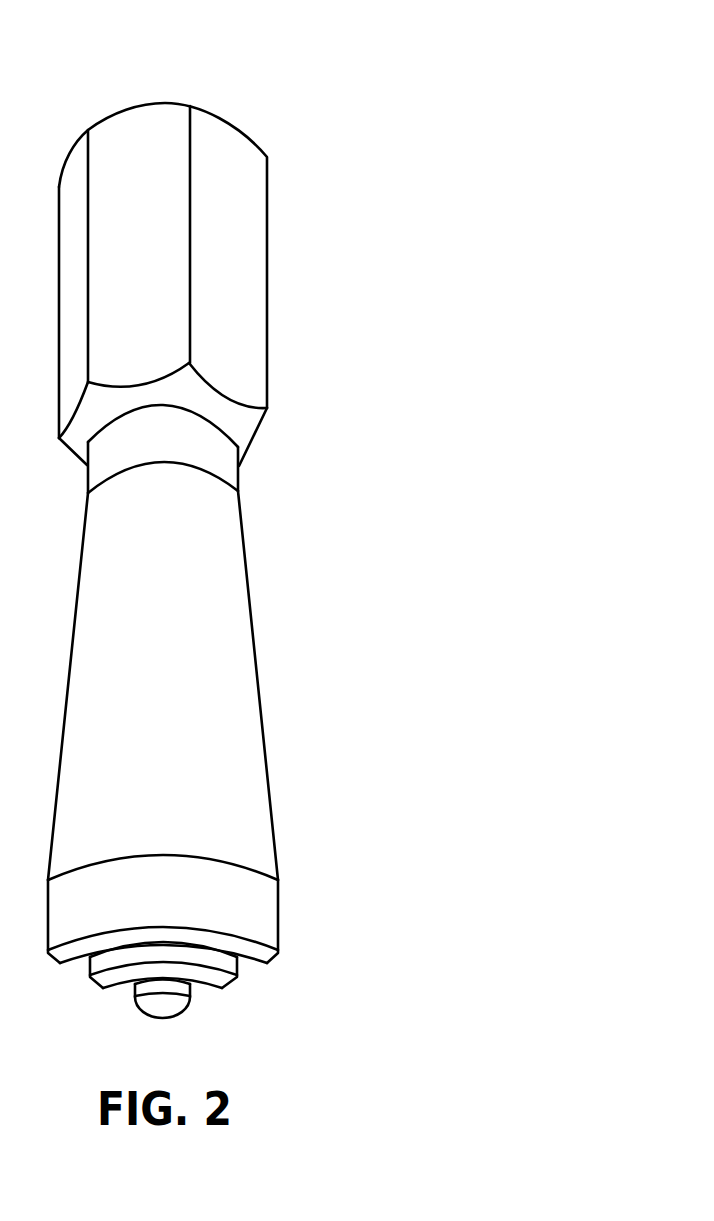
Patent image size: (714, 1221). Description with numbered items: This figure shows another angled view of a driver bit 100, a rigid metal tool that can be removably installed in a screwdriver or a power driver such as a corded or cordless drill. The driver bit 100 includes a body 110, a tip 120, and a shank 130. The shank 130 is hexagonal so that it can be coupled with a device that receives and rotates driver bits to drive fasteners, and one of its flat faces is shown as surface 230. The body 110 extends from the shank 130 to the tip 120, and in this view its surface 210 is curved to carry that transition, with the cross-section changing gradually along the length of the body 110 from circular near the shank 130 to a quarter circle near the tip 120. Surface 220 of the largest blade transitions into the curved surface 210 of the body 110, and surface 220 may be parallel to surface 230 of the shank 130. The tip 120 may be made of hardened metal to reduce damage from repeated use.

The driver bit 100 is at (307, 78).
The body 110 is at (277, 591).
The tip 120 is at (329, 889).
The shank 130 is at (267, 305).
The surface 210 is at (185, 668).
The surface 220 is at (187, 902).
The surface 230 is at (158, 279).